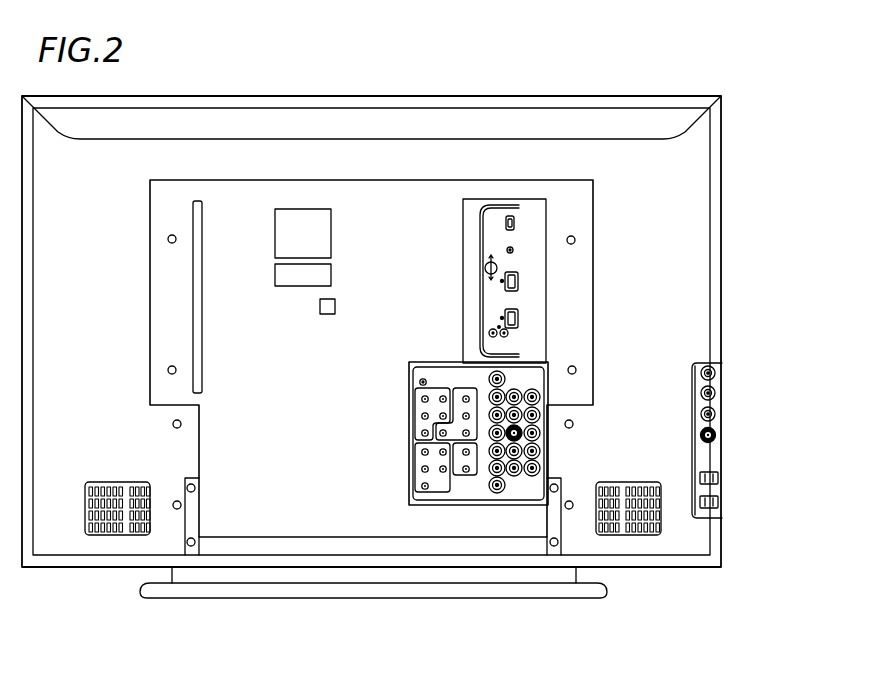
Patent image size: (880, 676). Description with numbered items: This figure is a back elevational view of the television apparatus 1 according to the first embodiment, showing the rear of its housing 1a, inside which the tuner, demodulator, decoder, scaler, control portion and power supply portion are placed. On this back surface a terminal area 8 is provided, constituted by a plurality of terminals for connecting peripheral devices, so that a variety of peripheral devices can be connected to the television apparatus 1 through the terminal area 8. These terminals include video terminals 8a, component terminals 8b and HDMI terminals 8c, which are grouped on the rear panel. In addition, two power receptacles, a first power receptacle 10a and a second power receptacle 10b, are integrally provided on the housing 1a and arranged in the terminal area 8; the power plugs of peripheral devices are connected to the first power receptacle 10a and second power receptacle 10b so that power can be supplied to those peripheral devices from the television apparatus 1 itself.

The television apparatus 1 is at (699, 79).
The housing 1a is at (368, 116).
The terminal area 8 is at (681, 209).
The video terminals 8a is at (458, 394).
The component terminals 8b is at (436, 394).
The HDMI terminals 8c is at (519, 281).
The first power receptacle 10a is at (712, 470).
The second power receptacle 10b is at (712, 508).